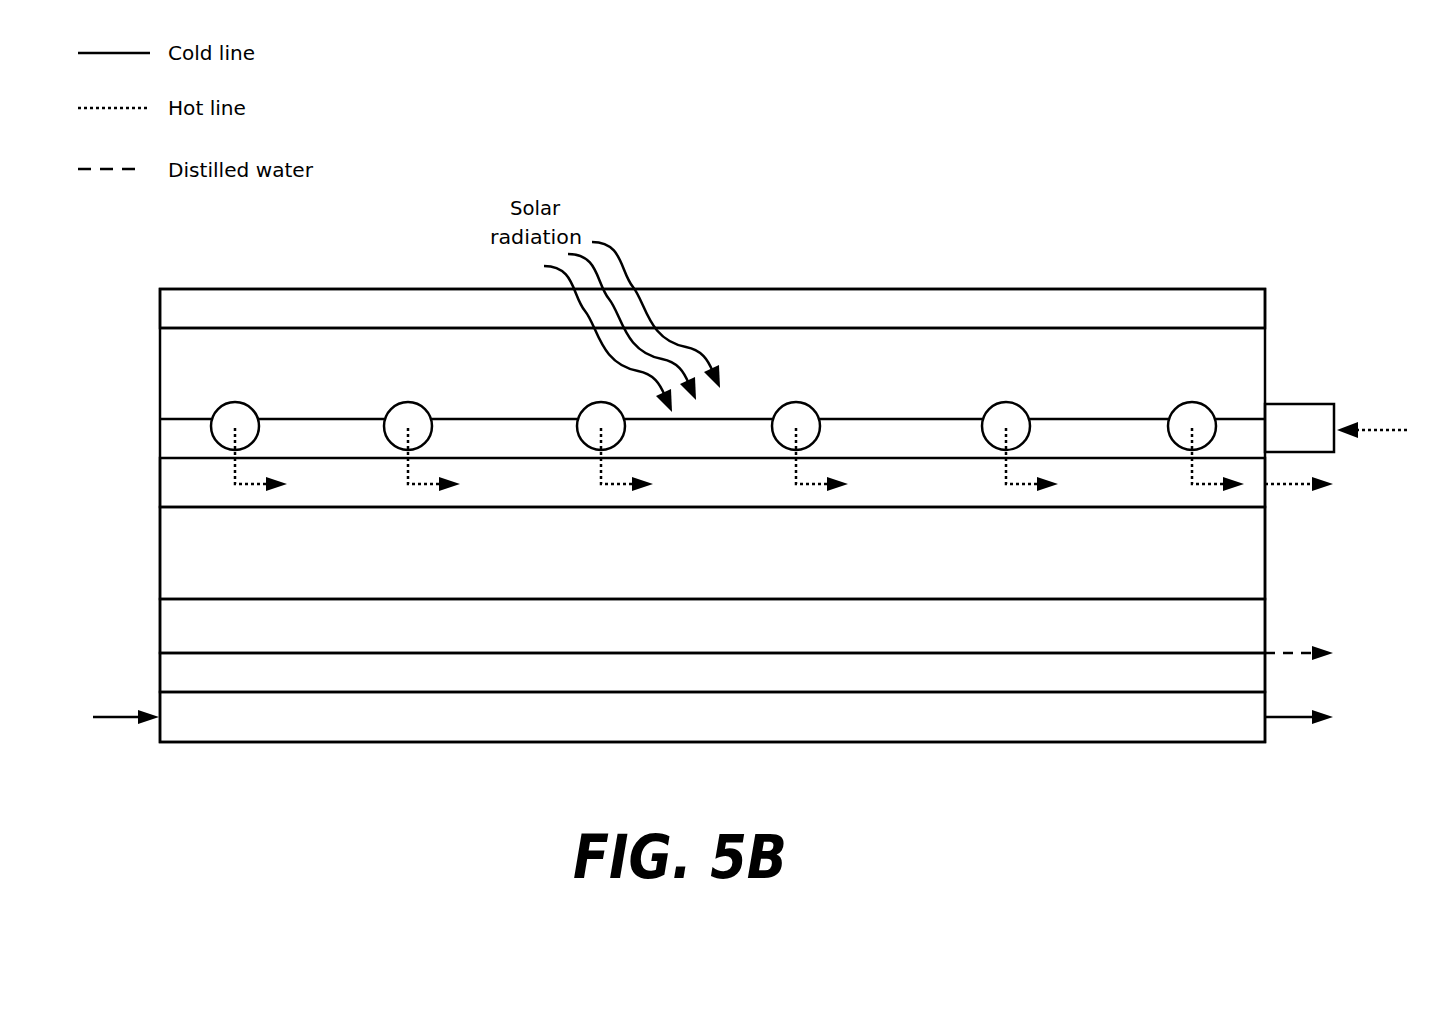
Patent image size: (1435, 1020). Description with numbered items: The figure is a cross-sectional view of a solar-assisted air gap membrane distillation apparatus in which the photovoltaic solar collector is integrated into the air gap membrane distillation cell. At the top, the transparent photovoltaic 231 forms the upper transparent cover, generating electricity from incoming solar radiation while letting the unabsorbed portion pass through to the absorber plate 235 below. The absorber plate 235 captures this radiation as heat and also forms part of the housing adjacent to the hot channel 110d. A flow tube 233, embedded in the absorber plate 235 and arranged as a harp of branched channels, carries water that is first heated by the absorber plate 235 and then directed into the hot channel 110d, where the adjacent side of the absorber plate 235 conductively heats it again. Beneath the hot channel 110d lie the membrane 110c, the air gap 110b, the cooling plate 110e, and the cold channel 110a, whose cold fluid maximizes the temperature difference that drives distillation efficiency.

The transparent photovoltaic 231 is at (312, 301).
The flow tube 233 is at (407, 412).
The absorber plate 235 is at (528, 427).
The cold channel 110a is at (714, 732).
The air gap 110b is at (714, 636).
The membrane 110c is at (714, 562).
The hot channel 110d is at (717, 494).
The cooling plate 110e is at (714, 686).